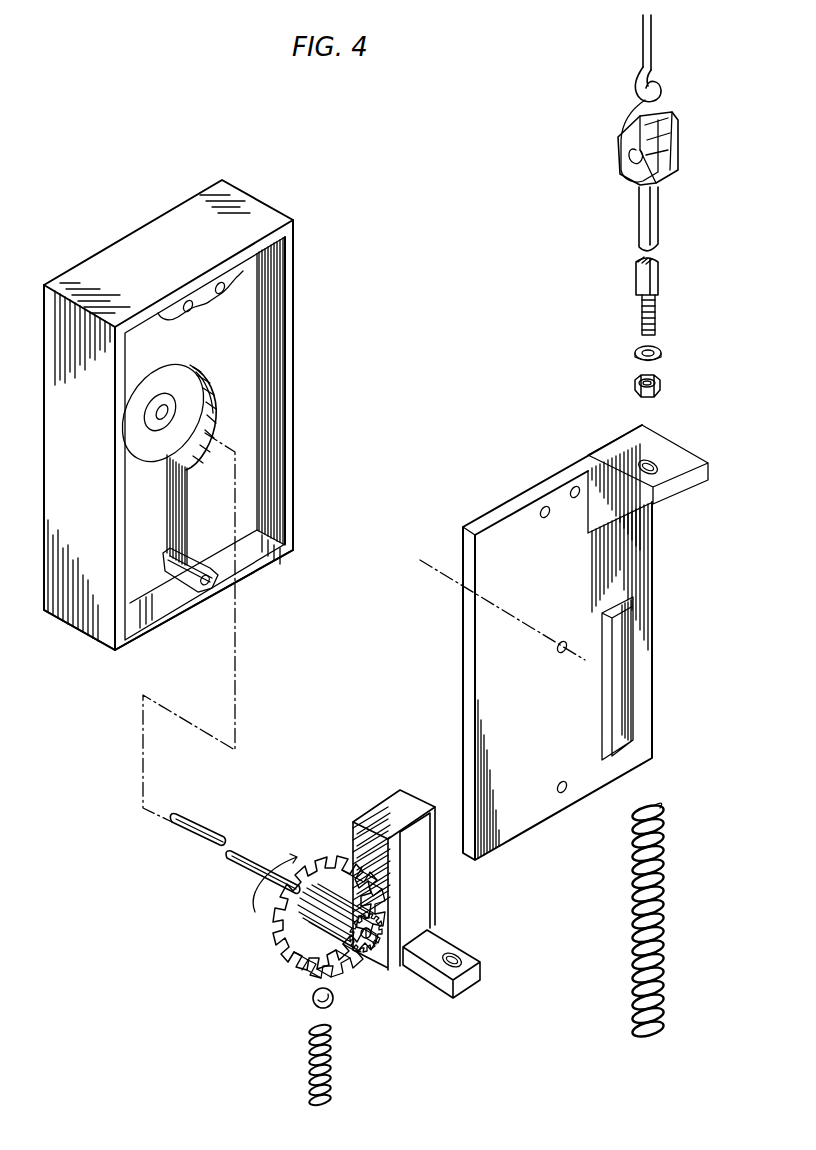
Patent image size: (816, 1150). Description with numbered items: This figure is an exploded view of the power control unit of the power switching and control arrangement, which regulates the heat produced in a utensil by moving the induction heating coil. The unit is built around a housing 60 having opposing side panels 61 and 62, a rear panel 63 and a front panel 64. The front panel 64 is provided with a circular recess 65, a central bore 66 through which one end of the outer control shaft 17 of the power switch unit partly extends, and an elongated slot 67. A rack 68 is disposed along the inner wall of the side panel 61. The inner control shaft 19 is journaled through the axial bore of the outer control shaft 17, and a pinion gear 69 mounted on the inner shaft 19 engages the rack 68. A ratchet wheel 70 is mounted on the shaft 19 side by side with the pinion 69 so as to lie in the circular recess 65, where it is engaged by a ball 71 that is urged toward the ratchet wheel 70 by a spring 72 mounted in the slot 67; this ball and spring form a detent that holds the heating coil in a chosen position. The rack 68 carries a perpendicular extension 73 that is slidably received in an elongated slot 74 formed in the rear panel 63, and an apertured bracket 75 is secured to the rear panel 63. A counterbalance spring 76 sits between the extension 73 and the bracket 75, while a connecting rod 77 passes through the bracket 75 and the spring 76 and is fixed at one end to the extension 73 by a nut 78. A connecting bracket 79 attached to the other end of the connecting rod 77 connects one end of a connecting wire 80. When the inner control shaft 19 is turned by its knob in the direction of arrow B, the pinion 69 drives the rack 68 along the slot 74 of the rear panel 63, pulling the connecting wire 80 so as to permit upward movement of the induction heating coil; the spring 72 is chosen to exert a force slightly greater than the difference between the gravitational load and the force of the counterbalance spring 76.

The housing 60 is at (151, 232).
The side panel 61 is at (277, 297).
The side panel 62 is at (100, 630).
The front panel 64 is at (170, 355).
The circular recess 65 is at (168, 414).
The central bore 66 is at (143, 443).
The outer control shaft 17 is at (158, 414).
The elongated slot 67 is at (178, 507).
The rear panel 63 is at (497, 510).
The apertured bracket 75 is at (657, 490).
The elongated slot 74 is at (623, 697).
The rack 68 is at (388, 802).
The perpendicular extension 73 is at (465, 952).
The ratchet wheel 70 is at (285, 957).
The pinion gear 69 is at (350, 960).
The inner control shaft 19 is at (180, 838).
The ball 71 is at (314, 1000).
The spring 72 is at (338, 1082).
The counterbalance spring 76 is at (634, 965).
The connecting wire 80 is at (643, 62).
The connecting bracket 79 is at (618, 170).
The connecting rod 77 is at (640, 280).
The nut 78 is at (635, 385).